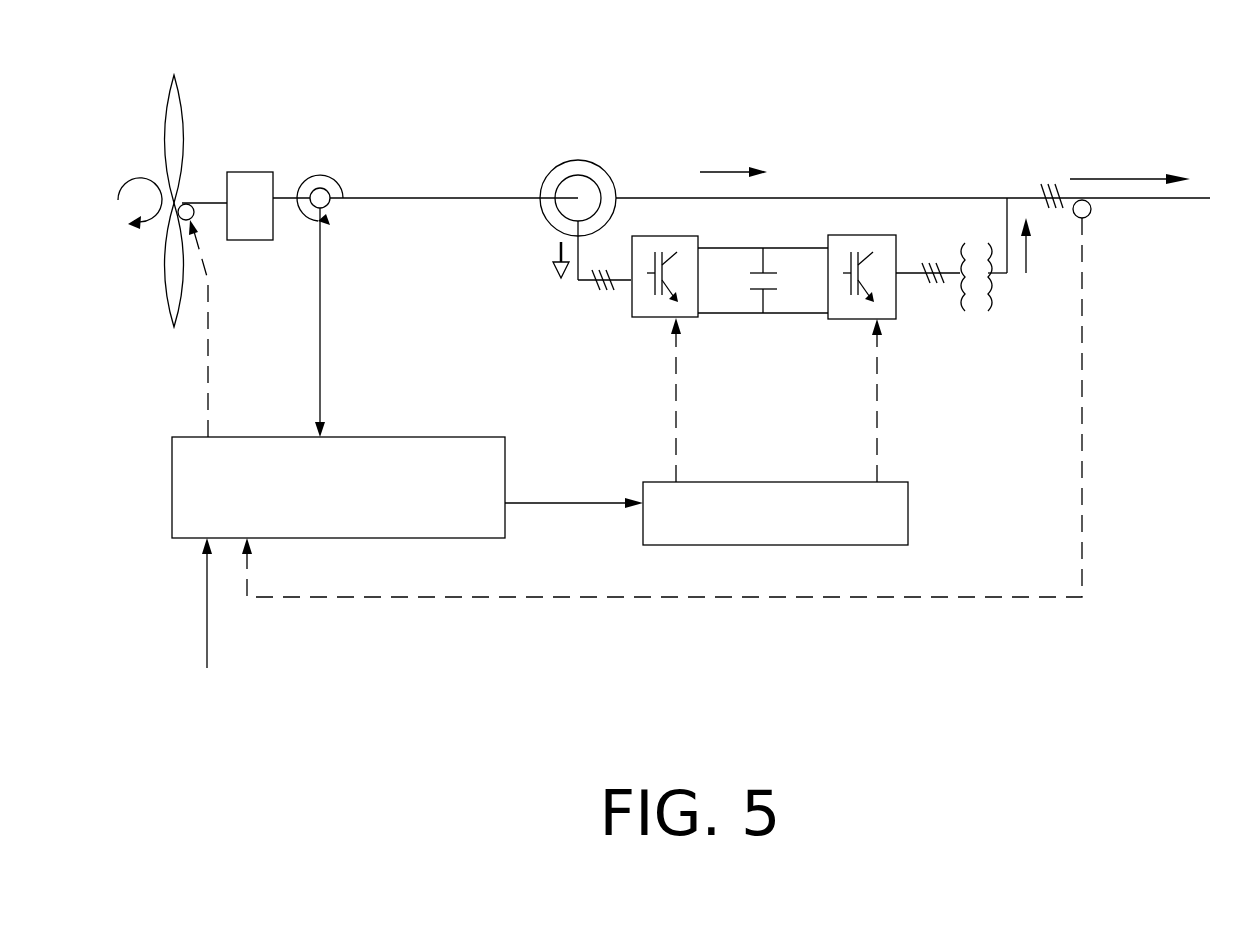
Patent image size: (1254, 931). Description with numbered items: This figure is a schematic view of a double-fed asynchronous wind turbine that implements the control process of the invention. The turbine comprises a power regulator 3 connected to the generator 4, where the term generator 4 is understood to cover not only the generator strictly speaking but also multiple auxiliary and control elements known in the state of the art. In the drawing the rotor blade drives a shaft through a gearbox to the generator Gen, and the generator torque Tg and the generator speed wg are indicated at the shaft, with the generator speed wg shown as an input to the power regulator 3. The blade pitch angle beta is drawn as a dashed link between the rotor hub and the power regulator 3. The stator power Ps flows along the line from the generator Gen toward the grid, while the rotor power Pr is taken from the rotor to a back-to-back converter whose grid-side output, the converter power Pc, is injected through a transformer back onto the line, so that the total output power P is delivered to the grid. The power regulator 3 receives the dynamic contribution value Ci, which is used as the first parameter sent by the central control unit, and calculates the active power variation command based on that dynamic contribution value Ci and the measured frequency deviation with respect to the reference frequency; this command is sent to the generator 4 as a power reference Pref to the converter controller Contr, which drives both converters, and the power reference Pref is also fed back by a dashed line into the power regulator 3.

The power regulator 3 is at (338, 487).
The generator 4 is at (842, 160).
The generator Gen is at (578, 177).
The generator torque Tg is at (338, 183).
The generator speed wg is at (297, 322).
The pitch angle beta is at (194, 328).
The rotor power Pr is at (545, 277).
The stator power Ps is at (733, 153).
The output power P is at (1130, 161).
The converter power Pc is at (1044, 247).
The power reference Pref is at (695, 407).
The converter controller Contr is at (775, 513).
The dynamic contribution value Ci is at (221, 603).